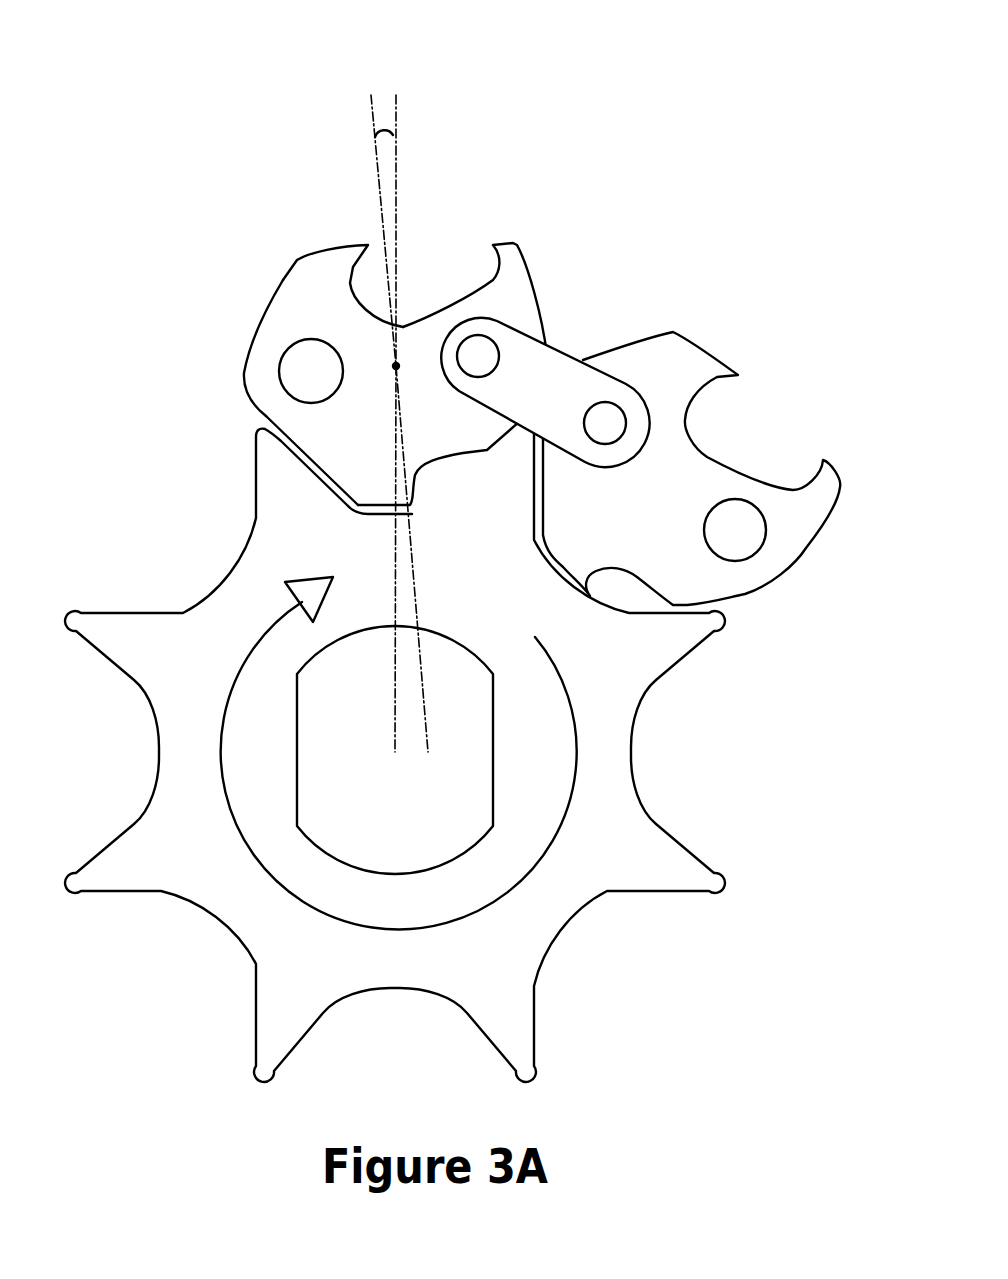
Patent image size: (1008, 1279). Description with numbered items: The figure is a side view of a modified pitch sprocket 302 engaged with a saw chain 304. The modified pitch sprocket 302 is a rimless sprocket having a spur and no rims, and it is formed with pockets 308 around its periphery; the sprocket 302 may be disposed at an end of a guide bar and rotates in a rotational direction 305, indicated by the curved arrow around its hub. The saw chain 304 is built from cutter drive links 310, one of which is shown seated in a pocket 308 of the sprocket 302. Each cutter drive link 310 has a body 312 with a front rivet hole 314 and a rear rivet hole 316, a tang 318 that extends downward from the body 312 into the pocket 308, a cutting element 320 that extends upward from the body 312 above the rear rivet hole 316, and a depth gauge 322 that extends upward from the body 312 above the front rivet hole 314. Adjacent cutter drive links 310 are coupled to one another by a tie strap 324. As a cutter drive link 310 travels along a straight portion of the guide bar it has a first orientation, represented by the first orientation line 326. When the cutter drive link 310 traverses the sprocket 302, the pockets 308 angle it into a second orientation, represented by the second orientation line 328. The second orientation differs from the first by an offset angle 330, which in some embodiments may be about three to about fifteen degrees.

The modified pitch sprocket 302 is at (376, 752).
The saw chain 304 is at (524, 386).
The rotational direction 305 is at (250, 847).
The pockets 308 is at (153, 753).
The cutter drive links 310 is at (491, 386).
The body 312 is at (360, 417).
The front rivet hole 314 is at (717, 530).
The rear rivet hole 316 is at (303, 380).
The tang 318 is at (377, 492).
The cutting element 320 is at (323, 248).
The depth gauge 322 is at (512, 245).
The tie strap 324 is at (547, 380).
The first orientation line 326 is at (397, 160).
The second orientation line 328 is at (378, 193).
The offset angle 330 is at (384, 129).